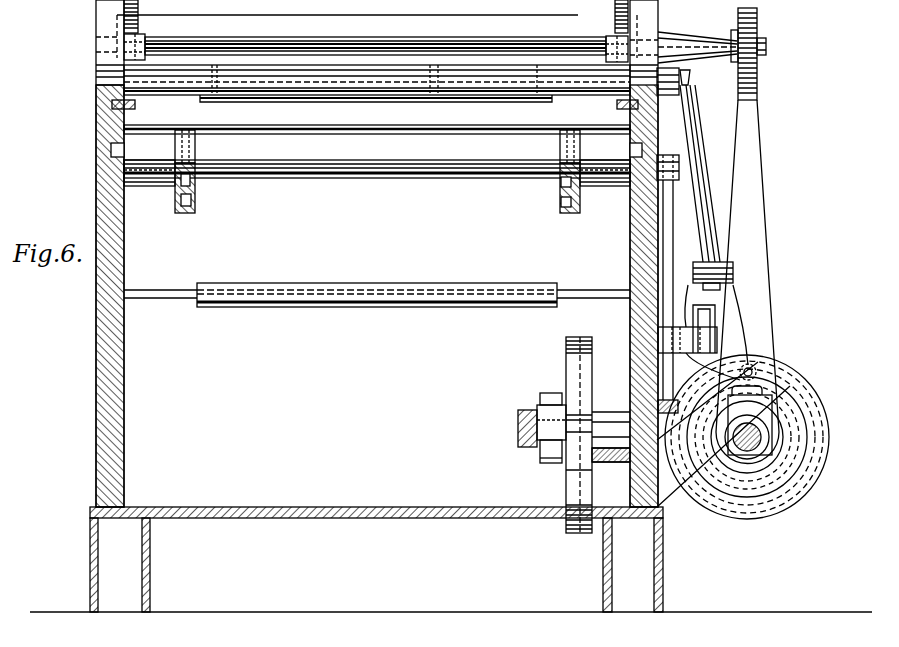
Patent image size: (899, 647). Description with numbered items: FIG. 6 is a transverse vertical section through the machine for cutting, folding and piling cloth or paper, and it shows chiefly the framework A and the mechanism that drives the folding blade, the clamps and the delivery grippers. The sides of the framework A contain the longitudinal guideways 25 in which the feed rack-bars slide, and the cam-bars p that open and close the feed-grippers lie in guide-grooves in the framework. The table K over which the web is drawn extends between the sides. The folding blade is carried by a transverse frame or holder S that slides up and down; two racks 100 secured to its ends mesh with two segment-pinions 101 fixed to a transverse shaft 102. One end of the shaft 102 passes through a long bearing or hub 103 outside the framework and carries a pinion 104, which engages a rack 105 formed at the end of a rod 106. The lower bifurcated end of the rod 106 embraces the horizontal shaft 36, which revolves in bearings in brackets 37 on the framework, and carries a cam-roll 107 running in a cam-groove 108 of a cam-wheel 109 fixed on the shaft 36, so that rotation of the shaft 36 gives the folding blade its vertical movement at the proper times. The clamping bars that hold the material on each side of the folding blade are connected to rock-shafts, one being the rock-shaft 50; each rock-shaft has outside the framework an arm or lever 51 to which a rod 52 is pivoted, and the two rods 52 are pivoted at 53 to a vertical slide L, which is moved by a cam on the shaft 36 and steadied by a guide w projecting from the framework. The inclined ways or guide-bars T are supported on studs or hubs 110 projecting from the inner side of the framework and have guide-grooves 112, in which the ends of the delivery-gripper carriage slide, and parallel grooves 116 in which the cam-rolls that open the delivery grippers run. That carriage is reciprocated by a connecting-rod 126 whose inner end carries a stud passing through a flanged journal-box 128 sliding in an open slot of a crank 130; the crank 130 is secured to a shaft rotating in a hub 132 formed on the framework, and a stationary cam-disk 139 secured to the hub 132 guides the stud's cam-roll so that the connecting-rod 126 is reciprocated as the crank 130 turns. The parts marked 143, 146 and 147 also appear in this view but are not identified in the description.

The racks 100 is at (138, 14).
The segment-pinions 101 is at (140, 40).
The transverse shaft 102 is at (405, 45).
The long bearing or hub 103 is at (688, 36).
The pinion 104 is at (764, 55).
The rack 105 is at (757, 82).
The rod 106 is at (754, 222).
The cam-roll 107 is at (752, 368).
The cam-groove 108 is at (778, 500).
The cam-wheel 109 is at (740, 512).
The studs or hubs 110 is at (147, 186).
The guide-grooves 112 is at (190, 181).
The longitudinal groove 116 is at (191, 200).
The connecting-rod 126 is at (518, 420).
The flanged journal-box 128 is at (545, 450).
The crank 130 is at (546, 463).
The hub 132 is at (610, 412).
The stationary cam-disk 139 is at (571, 337).
The roller 143 is at (342, 178).
The bracket 146 is at (666, 153).
The rod 147 is at (673, 250).
The longitudinal grooves or guideways 25 is at (124, 150).
The horizontal shaft 36 is at (784, 390).
The brackets 37 is at (666, 500).
The rock-shaft 50 is at (572, 95).
The arm or lever 51 is at (663, 95).
The rod 52 is at (703, 192).
The pivot 53 is at (733, 270).
The framework A is at (124, 370).
The table K is at (288, 136).
The inclined ways or guide-bars T is at (184, 214).
The frame or holder S is at (300, 308).
The vertical slide L is at (716, 332).
The guide w is at (678, 348).
The cam-bar p is at (135, 105).